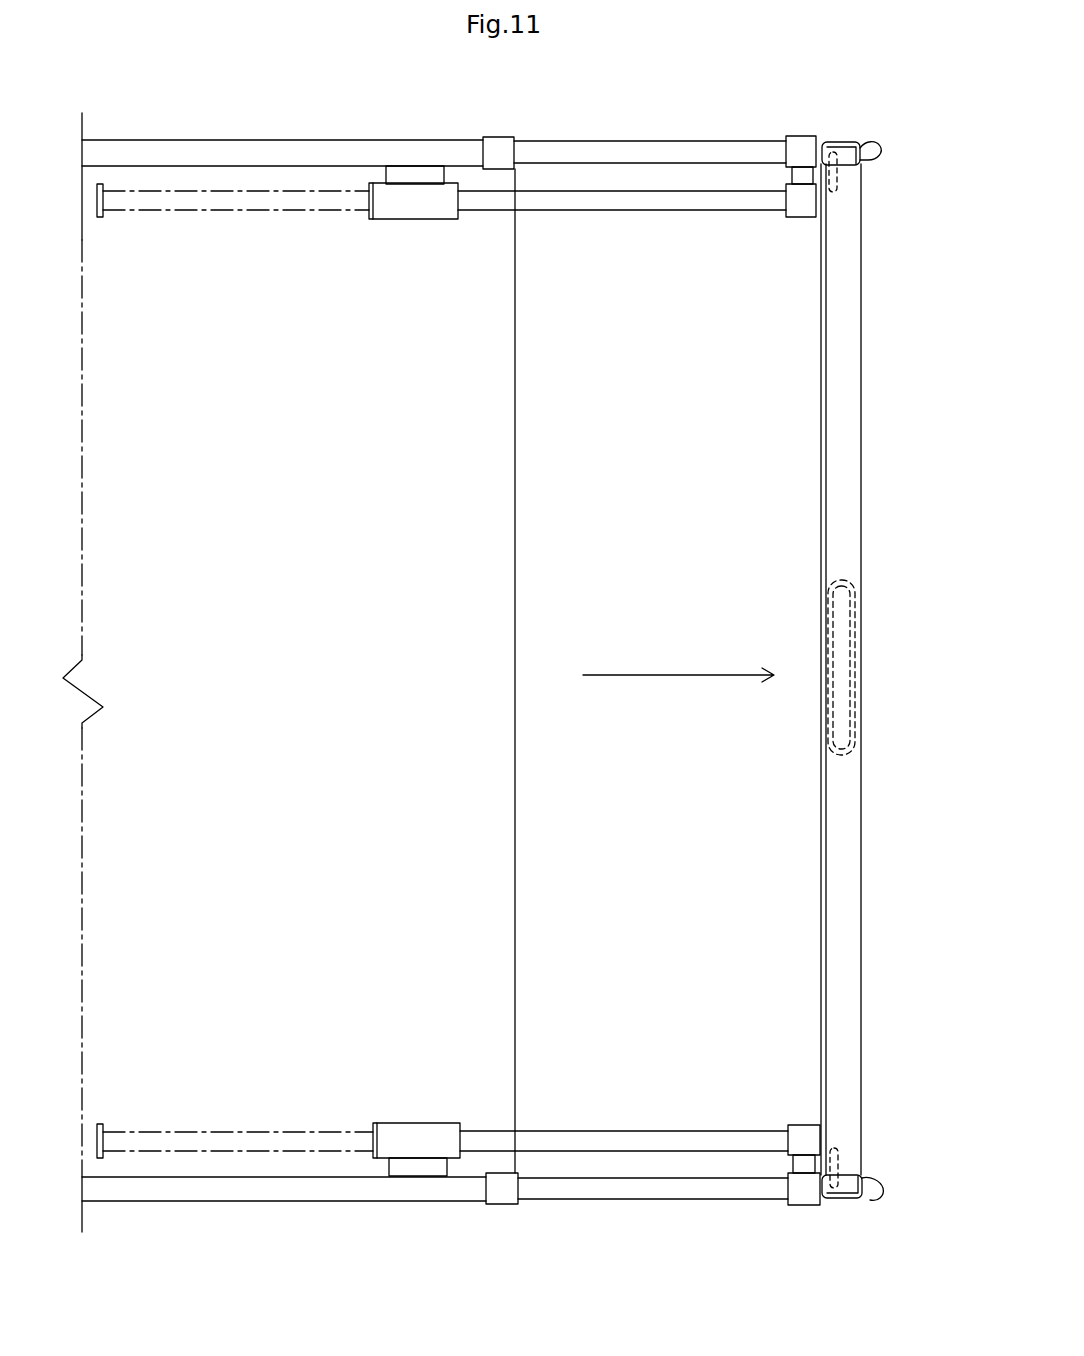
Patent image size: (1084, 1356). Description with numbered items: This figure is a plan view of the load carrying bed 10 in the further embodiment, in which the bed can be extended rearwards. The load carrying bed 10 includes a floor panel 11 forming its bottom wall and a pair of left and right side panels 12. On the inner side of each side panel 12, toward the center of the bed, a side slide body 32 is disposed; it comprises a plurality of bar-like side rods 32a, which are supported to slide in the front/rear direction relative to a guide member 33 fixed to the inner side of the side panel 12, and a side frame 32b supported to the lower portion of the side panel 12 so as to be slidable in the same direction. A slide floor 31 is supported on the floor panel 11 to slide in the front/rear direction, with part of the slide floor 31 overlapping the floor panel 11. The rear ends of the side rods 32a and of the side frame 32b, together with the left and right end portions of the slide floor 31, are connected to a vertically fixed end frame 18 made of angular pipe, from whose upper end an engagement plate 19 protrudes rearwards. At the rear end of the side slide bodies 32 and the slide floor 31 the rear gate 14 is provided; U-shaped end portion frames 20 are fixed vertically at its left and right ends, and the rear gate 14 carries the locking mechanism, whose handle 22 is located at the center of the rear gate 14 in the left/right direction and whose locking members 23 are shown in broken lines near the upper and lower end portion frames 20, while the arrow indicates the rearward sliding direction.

The load carrying bed 10 is at (248, 127).
The floor panel 11 is at (275, 245).
The side panel 12 is at (418, 150).
The rear gate 14 is at (848, 505).
The end frame 18 is at (800, 152).
The engagement plate 19 is at (878, 145).
The end portion frame 20 is at (843, 145).
The handle 22 is at (857, 668).
The locking pin L 23 is at (832, 178).
The slide floor 31 is at (785, 855).
The side slide body 32 is at (458, 673).
The side rod 32a is at (655, 200).
The side frame 32b is at (605, 150).
The guide member 33 is at (415, 205).